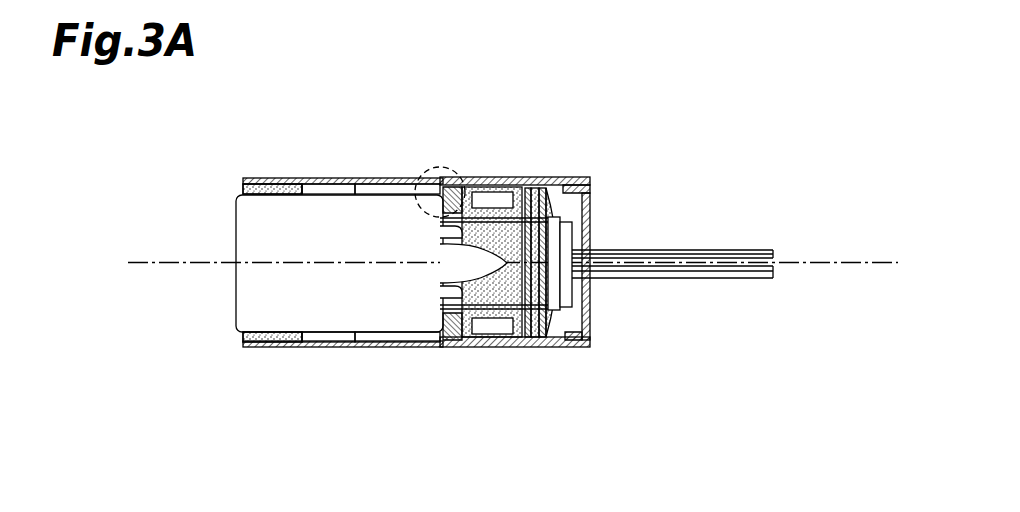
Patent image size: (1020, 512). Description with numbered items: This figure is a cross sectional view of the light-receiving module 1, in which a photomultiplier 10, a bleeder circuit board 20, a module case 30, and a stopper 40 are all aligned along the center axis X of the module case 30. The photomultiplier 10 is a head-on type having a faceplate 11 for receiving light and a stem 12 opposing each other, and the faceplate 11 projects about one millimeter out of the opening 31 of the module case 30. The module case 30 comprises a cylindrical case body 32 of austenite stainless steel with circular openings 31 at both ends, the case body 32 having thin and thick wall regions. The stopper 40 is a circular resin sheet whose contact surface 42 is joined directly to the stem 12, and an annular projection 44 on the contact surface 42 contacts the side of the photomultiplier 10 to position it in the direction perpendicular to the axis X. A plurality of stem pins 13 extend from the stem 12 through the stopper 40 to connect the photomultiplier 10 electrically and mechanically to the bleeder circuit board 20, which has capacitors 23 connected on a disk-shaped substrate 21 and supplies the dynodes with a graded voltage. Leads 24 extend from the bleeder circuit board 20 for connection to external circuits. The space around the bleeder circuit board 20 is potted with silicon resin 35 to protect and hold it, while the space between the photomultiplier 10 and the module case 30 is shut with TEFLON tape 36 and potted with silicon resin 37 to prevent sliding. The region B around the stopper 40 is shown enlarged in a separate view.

The light-receiving module 1 is at (366, 177).
The photomultiplier 10 is at (278, 322).
The faceplate 11 is at (237, 303).
The stem 12 is at (447, 295).
The stem pins 13 is at (470, 348).
The bleeder circuit board 20 is at (527, 347).
The substrate 21 is at (542, 192).
The capacitors 23 is at (497, 347).
The leads 24 is at (682, 275).
The module case 30 is at (310, 348).
The openings 31 is at (243, 338).
The case body 32 is at (358, 348).
The silicon resin 35 is at (470, 250).
The TEFLON tape 36 is at (328, 186).
The silicon resin 37 is at (268, 183).
The stopper 40 is at (450, 340).
The contact surface 42 is at (443, 319).
The annular projection 44 is at (425, 347).
The region B is at (457, 168).
The center axis X is at (155, 265).